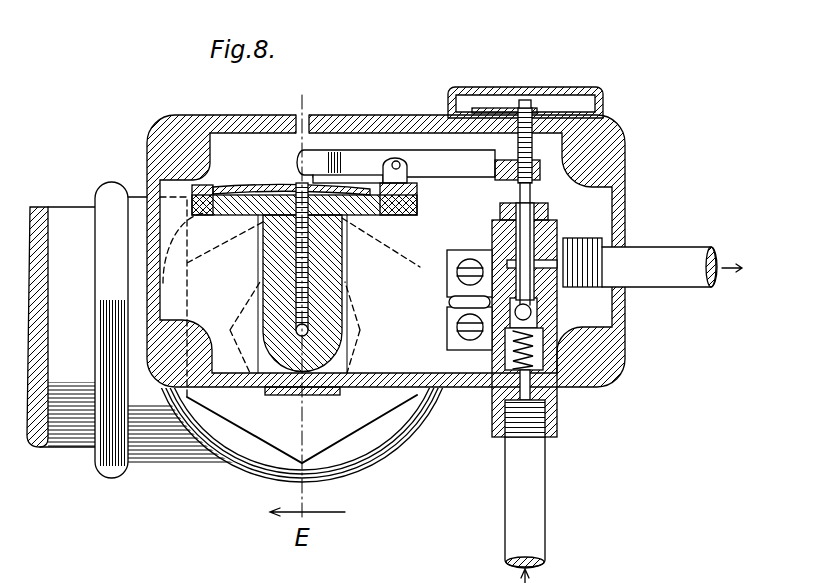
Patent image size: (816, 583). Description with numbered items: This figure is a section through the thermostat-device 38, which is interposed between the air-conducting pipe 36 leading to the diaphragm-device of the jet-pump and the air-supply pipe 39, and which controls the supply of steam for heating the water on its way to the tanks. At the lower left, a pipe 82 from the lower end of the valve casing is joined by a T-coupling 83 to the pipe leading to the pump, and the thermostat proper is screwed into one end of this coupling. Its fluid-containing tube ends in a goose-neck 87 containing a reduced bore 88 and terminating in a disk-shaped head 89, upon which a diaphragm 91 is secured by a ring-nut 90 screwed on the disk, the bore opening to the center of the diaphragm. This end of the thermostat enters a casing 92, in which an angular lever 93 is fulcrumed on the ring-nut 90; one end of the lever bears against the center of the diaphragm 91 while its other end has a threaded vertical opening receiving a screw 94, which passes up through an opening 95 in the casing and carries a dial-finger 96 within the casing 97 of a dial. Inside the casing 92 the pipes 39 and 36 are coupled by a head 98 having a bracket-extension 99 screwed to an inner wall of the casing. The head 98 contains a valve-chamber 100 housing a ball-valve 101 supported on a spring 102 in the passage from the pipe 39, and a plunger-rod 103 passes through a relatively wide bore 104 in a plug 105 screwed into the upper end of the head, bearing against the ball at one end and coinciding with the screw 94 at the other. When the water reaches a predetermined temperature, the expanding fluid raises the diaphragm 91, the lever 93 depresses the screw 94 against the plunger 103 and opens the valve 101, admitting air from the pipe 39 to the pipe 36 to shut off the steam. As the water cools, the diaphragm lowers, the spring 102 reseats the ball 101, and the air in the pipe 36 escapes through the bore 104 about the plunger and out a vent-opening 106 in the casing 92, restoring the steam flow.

The air-conducting pipe 36 is at (672, 257).
The thermostat-device 38 is at (138, 291).
The air-supply pipe 39 is at (533, 495).
The pipe 82 is at (61, 218).
The T-coupling 83 is at (130, 345).
The goose-neck 87 is at (343, 352).
The reduced bore 88 is at (299, 238).
The disk-shaped head 89 is at (377, 208).
The ring-nut 90 is at (418, 205).
The diaphragm 91 is at (272, 186).
The casing 92 is at (225, 125).
The angular lever 93 is at (428, 158).
The screw 94 is at (521, 160).
The opening 95 is at (548, 117).
The dial-finger 96 is at (486, 108).
The dial casing 97 is at (606, 104).
The head 98 is at (490, 248).
The bracket-extension 99 is at (455, 286).
The valve-chamber 100 is at (508, 322).
The ball-valve 101 is at (533, 318).
The spring 102 is at (532, 352).
The plunger-rod 103 is at (531, 201).
The bore 104 is at (504, 218).
The plug 105 is at (556, 229).
The vent-opening 106 is at (308, 122).